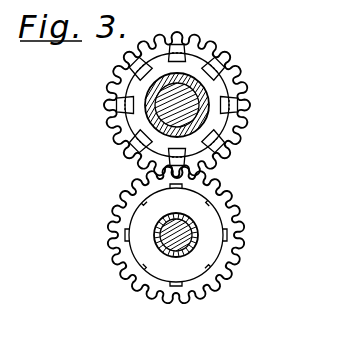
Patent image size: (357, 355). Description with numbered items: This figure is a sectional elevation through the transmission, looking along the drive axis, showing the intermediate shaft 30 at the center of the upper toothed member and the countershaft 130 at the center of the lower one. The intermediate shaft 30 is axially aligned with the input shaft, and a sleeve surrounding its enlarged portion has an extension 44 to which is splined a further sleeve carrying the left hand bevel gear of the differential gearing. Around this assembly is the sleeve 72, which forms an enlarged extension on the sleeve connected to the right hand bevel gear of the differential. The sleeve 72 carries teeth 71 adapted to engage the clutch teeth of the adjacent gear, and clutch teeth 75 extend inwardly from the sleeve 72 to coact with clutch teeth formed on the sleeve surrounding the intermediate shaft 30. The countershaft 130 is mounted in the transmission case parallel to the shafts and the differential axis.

The intermediate shaft 30 is at (175, 96).
The teeth 71 is at (223, 60).
The extension 44 is at (208, 85).
The sleeve 72 is at (241, 88).
The clutch teeth 75 is at (209, 36).
The countershaft 130 is at (180, 235).